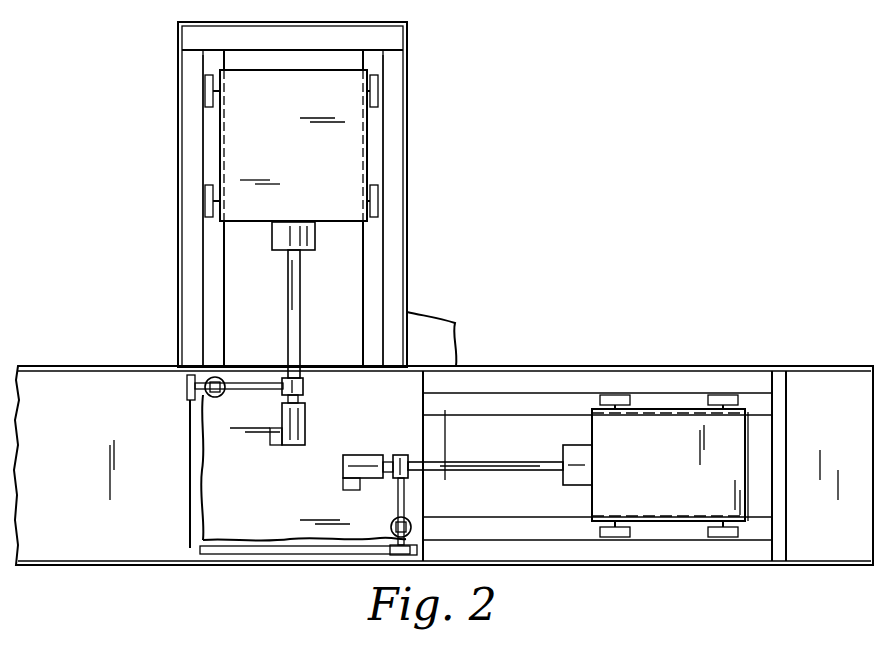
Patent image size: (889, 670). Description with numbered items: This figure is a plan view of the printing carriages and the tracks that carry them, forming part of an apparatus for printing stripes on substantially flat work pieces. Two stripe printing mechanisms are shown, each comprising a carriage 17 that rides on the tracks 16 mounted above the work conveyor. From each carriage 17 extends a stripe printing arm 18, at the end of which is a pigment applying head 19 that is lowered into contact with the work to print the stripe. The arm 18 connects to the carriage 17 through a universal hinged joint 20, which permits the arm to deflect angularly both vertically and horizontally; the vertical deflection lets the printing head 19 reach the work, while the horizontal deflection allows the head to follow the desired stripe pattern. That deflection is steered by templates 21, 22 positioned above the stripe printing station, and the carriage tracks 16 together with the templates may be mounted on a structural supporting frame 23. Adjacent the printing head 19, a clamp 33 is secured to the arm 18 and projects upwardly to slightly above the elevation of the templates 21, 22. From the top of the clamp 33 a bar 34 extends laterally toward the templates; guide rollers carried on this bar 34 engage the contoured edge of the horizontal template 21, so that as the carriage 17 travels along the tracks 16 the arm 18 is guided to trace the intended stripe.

The tracks 16 is at (362, 340).
The carriage 17 is at (300, 156).
The stripe printing arm 18 is at (300, 310).
The pigment applying head 19 is at (360, 450).
The universal hinged joint 20 is at (316, 243).
The template 21 is at (262, 540).
The template 22 is at (188, 522).
The structural supporting frame 23 is at (334, 194).
The clamp 33 is at (304, 386).
The bar 34 is at (240, 390).